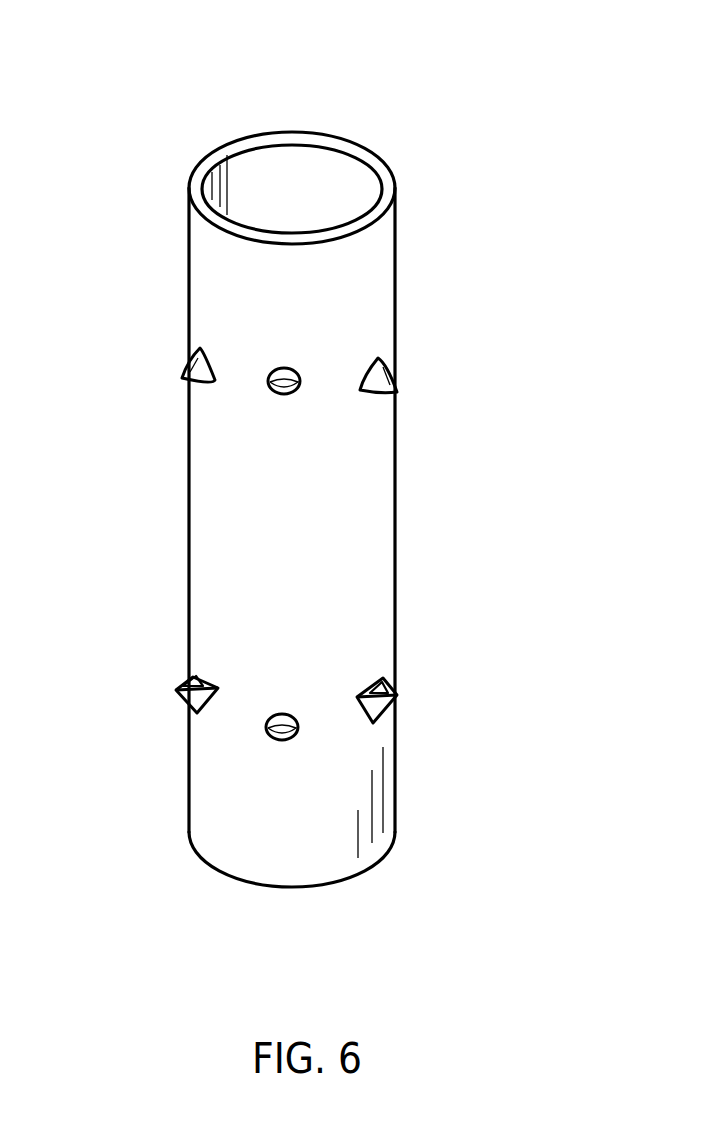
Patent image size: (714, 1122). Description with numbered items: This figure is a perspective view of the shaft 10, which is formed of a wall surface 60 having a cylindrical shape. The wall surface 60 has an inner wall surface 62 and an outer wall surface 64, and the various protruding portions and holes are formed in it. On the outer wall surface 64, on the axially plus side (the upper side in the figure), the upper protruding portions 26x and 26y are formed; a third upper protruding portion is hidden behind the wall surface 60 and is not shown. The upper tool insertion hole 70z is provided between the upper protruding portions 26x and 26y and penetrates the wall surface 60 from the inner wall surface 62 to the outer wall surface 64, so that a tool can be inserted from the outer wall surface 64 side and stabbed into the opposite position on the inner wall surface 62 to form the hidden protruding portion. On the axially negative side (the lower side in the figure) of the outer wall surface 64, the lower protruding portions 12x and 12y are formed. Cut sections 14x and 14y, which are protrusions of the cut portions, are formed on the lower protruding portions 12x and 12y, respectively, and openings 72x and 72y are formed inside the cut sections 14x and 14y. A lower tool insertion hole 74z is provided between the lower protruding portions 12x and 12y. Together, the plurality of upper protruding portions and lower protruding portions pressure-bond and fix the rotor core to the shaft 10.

The shaft 10 is at (405, 93).
The wall surface 60 is at (397, 180).
The inner wall surface 62 is at (363, 198).
The outer wall surface 64 is at (370, 270).
The upper protruding portion 26x is at (183, 368).
The upper protruding portion 26y is at (398, 378).
The upper tool insertion hole 70z is at (276, 372).
The lower tool insertion hole 74z is at (281, 718).
The lower protruding portion 12x is at (187, 698).
The lower protruding portion 12y is at (388, 718).
The cut section 14x is at (190, 682).
The cut section 14y is at (390, 678).
The opening 72x is at (195, 678).
The opening 72y is at (380, 681).